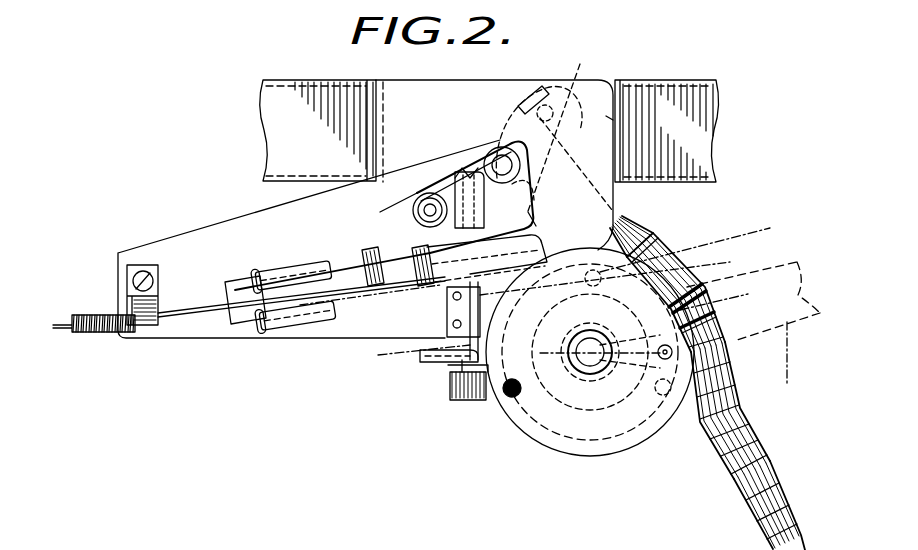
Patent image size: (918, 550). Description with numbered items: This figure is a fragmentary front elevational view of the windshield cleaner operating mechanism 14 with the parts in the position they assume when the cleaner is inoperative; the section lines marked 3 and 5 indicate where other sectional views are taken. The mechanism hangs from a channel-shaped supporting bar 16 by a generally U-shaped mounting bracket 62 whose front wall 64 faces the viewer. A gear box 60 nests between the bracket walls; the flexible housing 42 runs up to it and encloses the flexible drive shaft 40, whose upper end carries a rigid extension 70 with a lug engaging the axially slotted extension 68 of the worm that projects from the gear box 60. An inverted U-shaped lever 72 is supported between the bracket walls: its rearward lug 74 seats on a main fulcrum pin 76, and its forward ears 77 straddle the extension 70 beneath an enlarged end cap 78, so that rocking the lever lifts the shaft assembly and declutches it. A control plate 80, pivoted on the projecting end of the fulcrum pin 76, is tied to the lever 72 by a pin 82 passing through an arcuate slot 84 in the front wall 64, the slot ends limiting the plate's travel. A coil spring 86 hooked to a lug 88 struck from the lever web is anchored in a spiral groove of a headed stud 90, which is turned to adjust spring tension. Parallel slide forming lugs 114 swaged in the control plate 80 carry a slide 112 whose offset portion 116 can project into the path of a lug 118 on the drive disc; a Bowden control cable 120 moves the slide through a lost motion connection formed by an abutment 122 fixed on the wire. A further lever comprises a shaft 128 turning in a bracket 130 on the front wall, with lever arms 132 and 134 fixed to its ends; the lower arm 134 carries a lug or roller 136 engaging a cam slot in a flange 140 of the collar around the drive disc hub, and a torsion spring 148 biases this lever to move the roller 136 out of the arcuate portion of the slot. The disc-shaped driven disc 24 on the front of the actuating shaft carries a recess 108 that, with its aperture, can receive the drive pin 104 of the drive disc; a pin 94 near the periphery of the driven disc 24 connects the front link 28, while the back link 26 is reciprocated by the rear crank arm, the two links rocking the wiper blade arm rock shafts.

The mounting bracket 62 is at (412, 86).
The supporting bar 16 is at (690, 95).
The front wall 64 is at (592, 96).
The lever 72 is at (530, 95).
The end cap 78 is at (565, 128).
The ears 77 is at (554, 112).
The extension 70 is at (614, 118).
The control plate 80 is at (208, 238).
The operating mechanism 14 is at (458, 146).
The link 26 is at (365, 305).
The control cable 120 is at (183, 320).
The slide 112 is at (240, 320).
The slide forming lugs 114 is at (286, 266).
The abutment 122 is at (368, 262).
The shaft 128 is at (414, 296).
The lug 74 is at (425, 188).
The main fulcrum pin 76 is at (413, 210).
The pin 82 is at (502, 156).
The lug 88 is at (468, 162).
The coil spring 86 is at (486, 216).
The arcuate slot 84 is at (536, 180).
The offset portion 116 is at (551, 214).
The lug 118 is at (534, 244).
The lever arm 132 is at (488, 261).
The bracket 130 is at (445, 340).
The lever arm 134 is at (450, 362).
The stud 90 is at (462, 398).
The flange 140 is at (448, 368).
The pin 94 is at (508, 396).
The lug or roller 136 is at (566, 393).
The torsion spring 148 is at (578, 352).
The recess 108 is at (602, 281).
The drive pin 104 is at (712, 322).
The driven disc 24 is at (655, 275).
The slotted extension 68 is at (622, 220).
The gear box 60 is at (690, 272).
The flexible housing 42 is at (762, 478).
The flexible drive shaft 40 is at (775, 545).
The link 28 is at (753, 325).
The section line 3 is at (760, 232).
The section line 5 is at (745, 300).